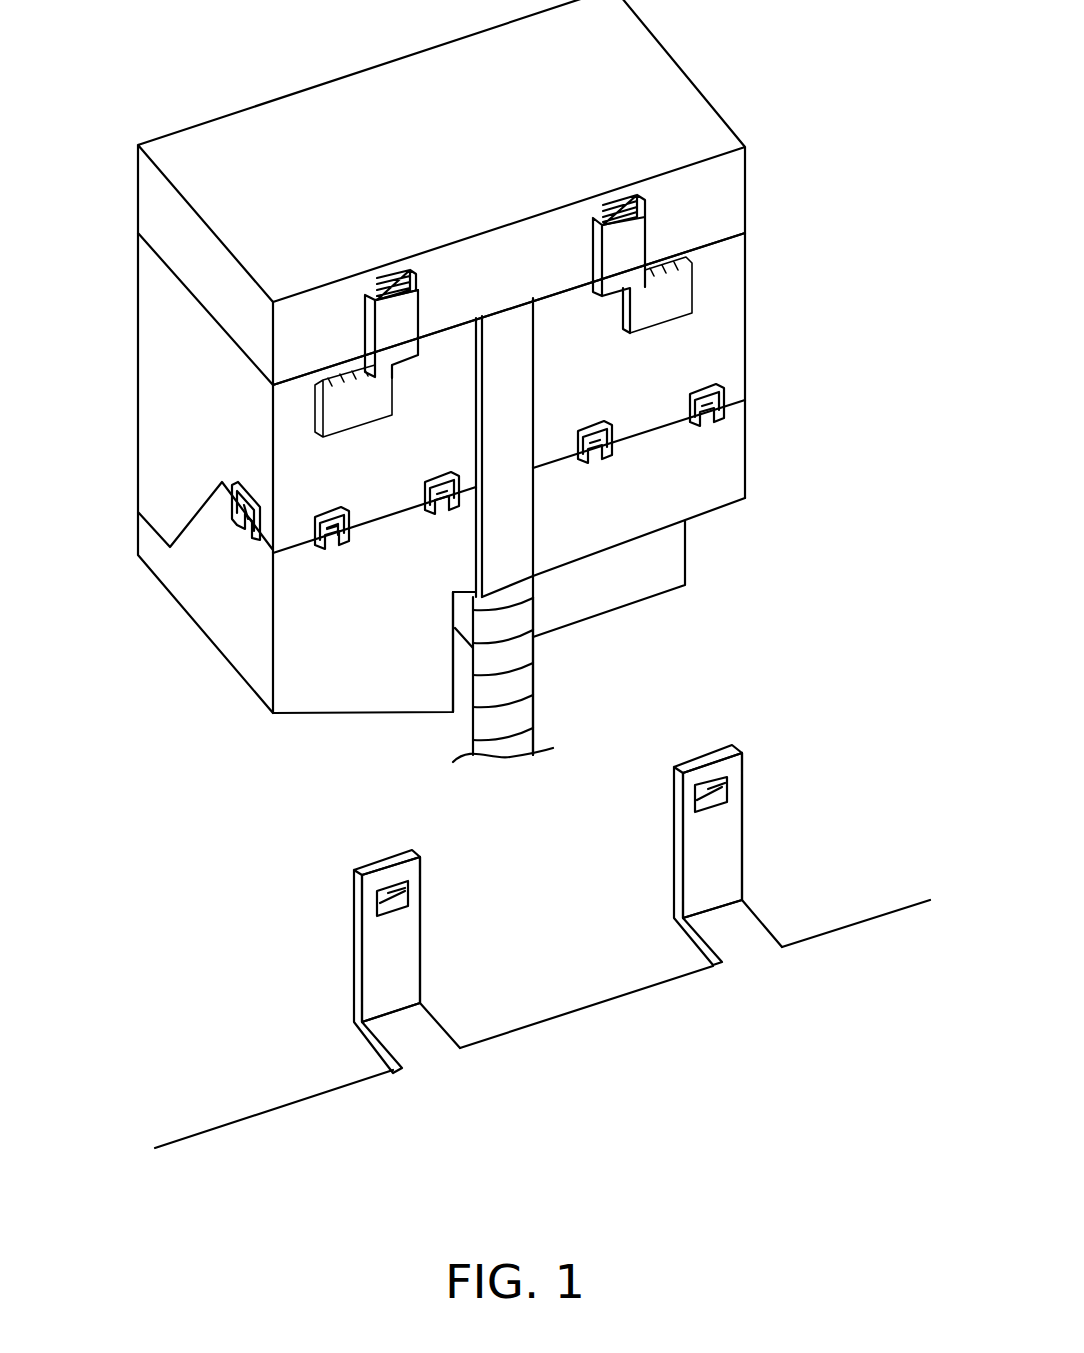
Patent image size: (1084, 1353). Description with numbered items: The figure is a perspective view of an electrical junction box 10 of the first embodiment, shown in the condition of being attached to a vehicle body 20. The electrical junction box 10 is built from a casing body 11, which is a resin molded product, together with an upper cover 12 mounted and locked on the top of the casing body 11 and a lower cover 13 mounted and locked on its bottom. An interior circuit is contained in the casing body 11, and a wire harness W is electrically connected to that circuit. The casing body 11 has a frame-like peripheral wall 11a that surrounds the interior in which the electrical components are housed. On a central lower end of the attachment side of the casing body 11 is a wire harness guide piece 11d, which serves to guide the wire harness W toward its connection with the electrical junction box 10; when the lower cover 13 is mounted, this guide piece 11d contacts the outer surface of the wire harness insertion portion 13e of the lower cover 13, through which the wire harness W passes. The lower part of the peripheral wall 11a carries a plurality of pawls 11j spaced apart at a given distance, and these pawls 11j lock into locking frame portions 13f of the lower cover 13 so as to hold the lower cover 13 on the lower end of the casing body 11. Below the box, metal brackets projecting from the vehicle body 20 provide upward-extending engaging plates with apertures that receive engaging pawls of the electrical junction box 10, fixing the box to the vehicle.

The electrical junction box 10 is at (170, 130).
The casing body 11 is at (749, 383).
The peripheral wall 11a is at (722, 339).
The wire harness guide piece 11d is at (520, 540).
The pawls 11j is at (334, 532).
The upper cover 12 is at (640, 80).
The lower cover 13 is at (730, 473).
The wire harness insertion portion 13e is at (465, 555).
The locking frame portions 13f is at (315, 528).
The wire harness W is at (517, 688).
The vehicle body 20 is at (888, 935).